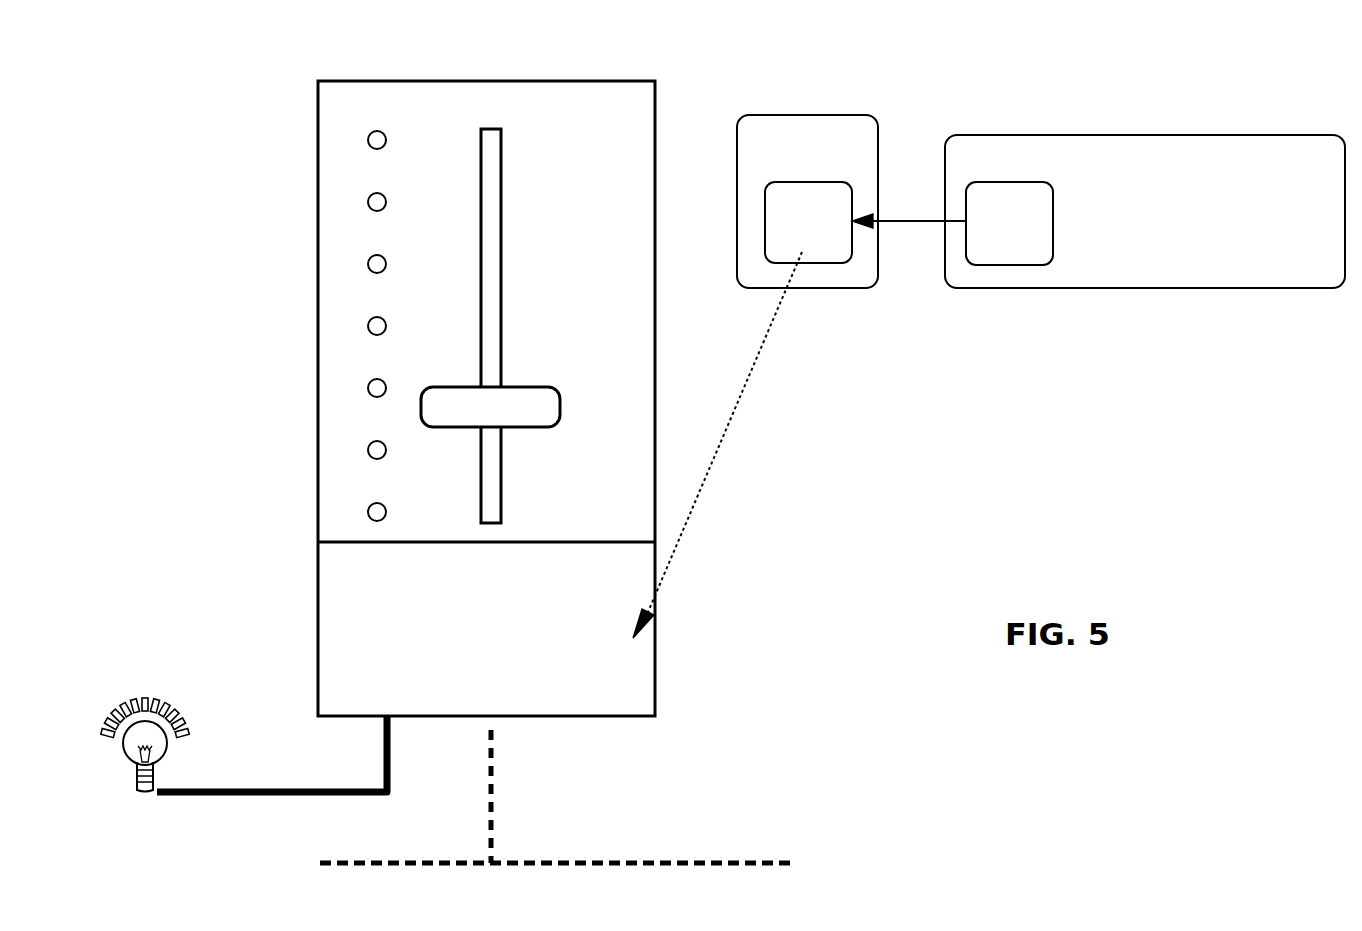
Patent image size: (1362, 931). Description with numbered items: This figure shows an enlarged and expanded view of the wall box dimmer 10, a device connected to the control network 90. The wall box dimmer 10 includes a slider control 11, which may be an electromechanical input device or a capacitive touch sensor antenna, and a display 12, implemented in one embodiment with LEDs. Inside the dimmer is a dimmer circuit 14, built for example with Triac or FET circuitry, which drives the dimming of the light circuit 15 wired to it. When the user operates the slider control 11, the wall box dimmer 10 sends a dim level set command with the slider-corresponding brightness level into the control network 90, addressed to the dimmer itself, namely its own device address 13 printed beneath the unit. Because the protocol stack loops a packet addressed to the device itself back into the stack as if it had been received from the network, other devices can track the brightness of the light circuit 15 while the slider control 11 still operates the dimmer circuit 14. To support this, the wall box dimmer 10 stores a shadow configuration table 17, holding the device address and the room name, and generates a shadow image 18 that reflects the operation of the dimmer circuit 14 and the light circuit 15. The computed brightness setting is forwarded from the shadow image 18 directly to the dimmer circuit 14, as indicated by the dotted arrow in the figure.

The wall box dimmer 10 is at (328, 97).
The slider control 11 is at (518, 368).
The display 12 is at (385, 122).
The device address 13 is at (670, 735).
The dimmer circuit 14 is at (330, 615).
The light circuit 15 is at (145, 692).
The shadow configuration table 17 is at (1135, 143).
The shadow image 18 is at (858, 130).
The control network 90 is at (735, 858).